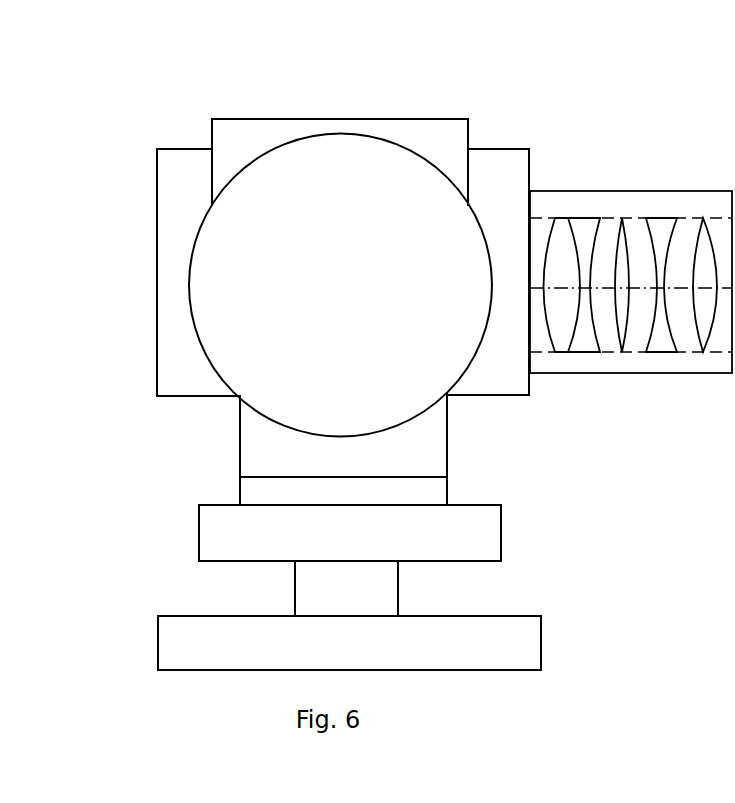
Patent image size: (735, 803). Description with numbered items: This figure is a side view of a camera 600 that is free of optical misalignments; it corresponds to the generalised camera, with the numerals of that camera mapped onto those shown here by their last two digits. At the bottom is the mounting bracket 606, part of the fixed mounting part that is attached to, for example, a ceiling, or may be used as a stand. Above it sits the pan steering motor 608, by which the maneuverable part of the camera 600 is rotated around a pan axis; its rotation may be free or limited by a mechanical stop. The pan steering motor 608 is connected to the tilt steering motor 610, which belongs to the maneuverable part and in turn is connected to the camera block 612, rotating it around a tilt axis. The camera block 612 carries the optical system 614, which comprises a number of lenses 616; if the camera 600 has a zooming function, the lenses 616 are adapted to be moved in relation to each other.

The camera 600 is at (377, 102).
The mounting bracket 606 is at (349, 615).
The pan steering motor 608 is at (350, 478).
The tilt steering motor 610 is at (340, 285).
The camera block 612 is at (197, 380).
The optical system 614 is at (590, 203).
The lenses 616 is at (648, 218).